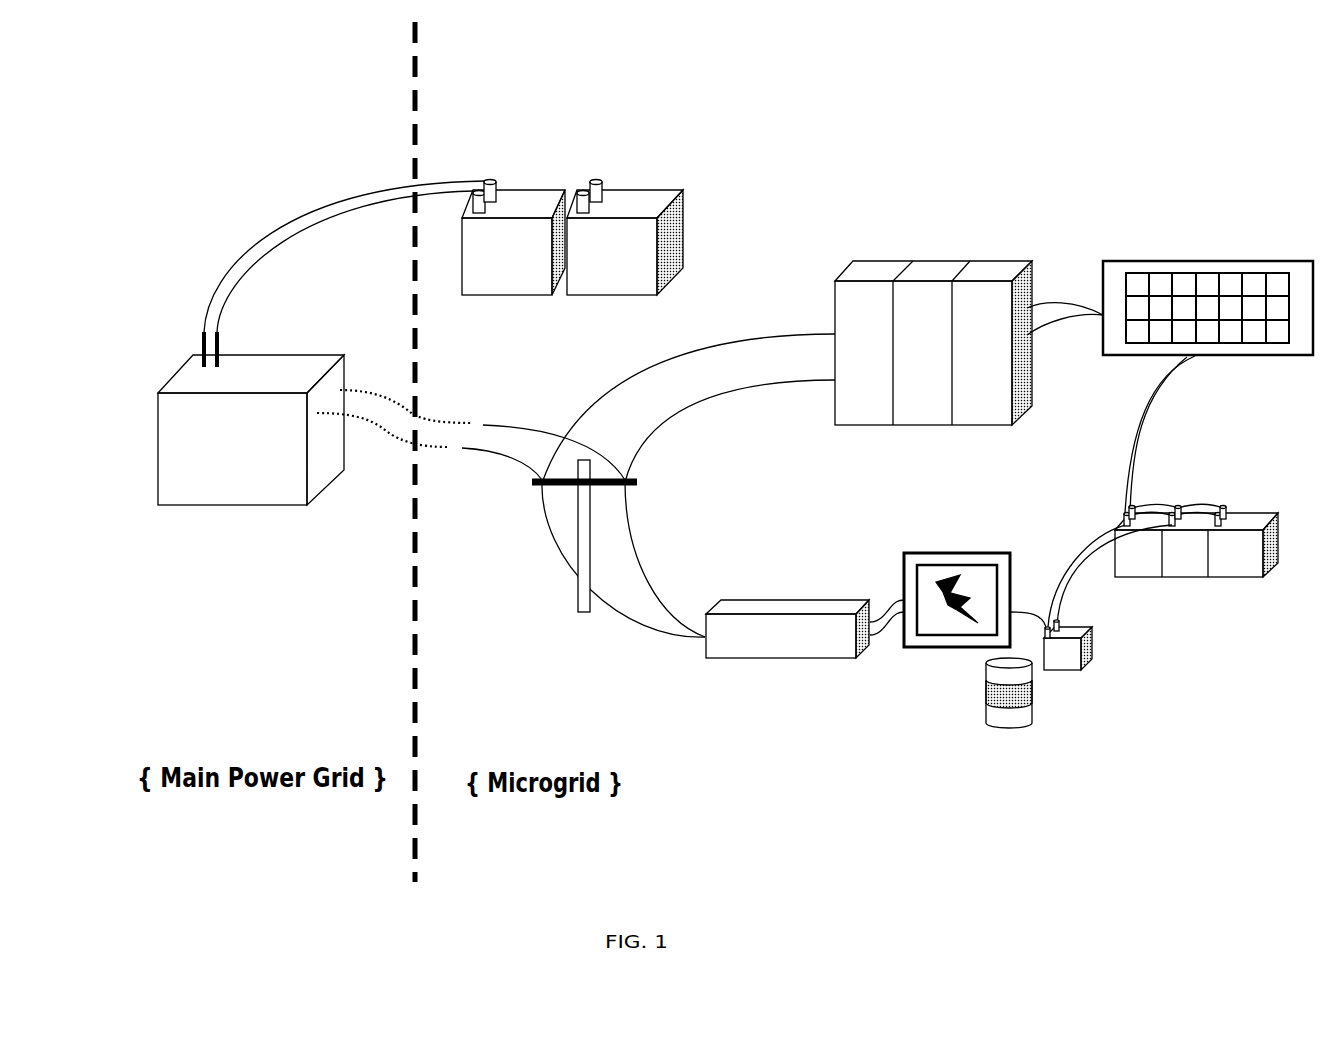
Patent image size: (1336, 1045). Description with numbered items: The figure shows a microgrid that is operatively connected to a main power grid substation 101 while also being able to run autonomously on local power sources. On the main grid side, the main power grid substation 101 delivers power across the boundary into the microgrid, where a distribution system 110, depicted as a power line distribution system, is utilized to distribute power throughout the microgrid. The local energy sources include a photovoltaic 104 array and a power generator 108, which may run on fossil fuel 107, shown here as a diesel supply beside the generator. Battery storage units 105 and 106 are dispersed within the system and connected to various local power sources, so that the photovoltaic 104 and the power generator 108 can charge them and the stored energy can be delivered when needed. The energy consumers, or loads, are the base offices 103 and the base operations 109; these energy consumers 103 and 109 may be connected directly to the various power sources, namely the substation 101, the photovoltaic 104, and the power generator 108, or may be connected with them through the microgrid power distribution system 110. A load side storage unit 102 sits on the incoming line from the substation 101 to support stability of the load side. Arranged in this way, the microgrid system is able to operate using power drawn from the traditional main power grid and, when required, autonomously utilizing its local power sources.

The main power grid substation 101 is at (182, 378).
The load side storage stability 102 is at (544, 203).
The energy consumer 103 is at (869, 273).
The photovoltaic 104 is at (1115, 273).
The battery storage unit 105 is at (1243, 518).
The battery storage unit 106 is at (1068, 658).
The fossil fuel 107 is at (997, 717).
The power generator 108 is at (928, 577).
The energy consumer 109 is at (718, 635).
The distribution system 110 is at (543, 403).